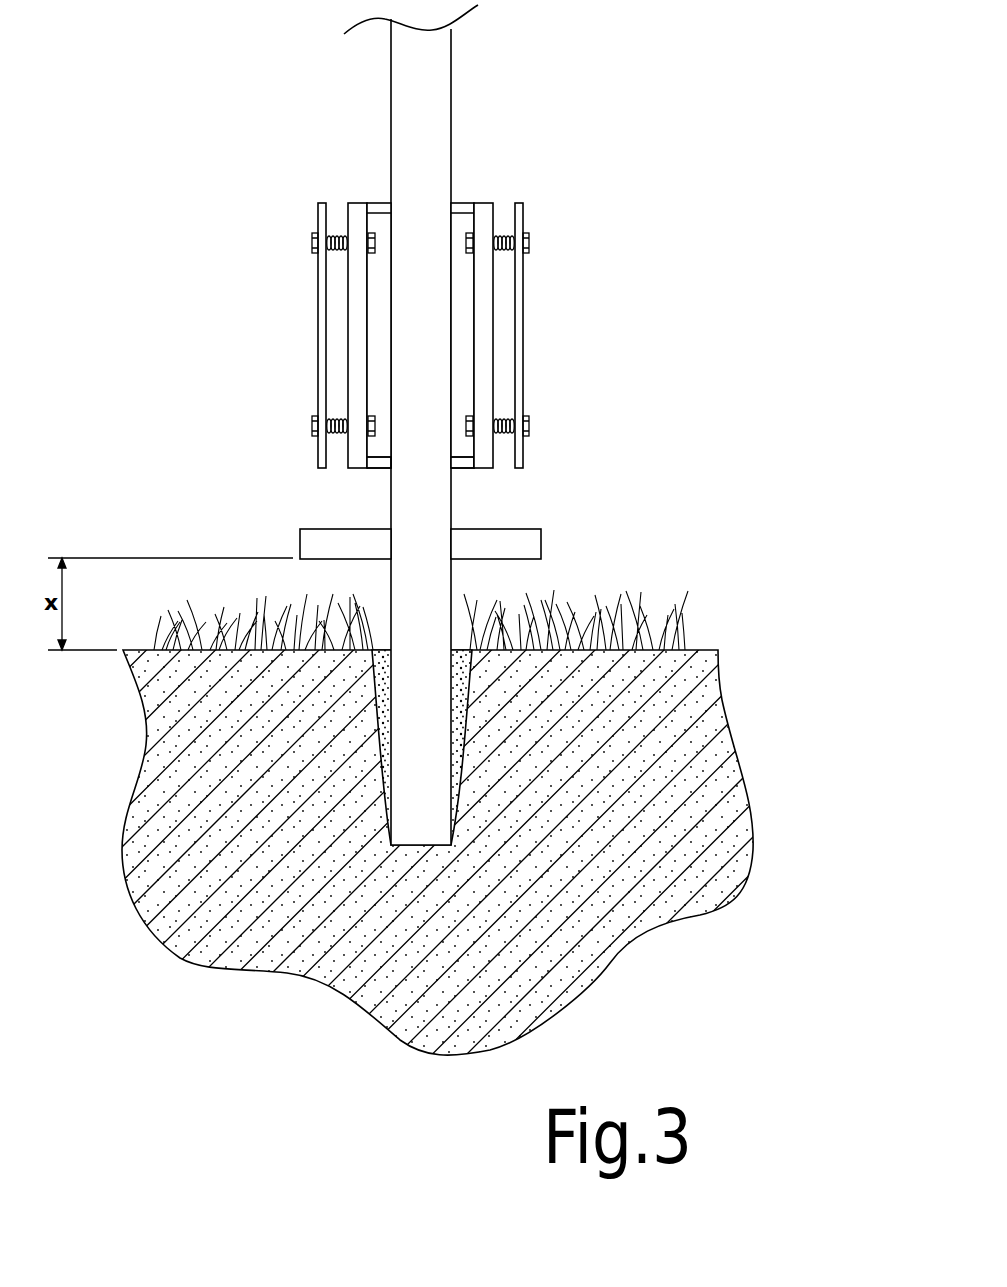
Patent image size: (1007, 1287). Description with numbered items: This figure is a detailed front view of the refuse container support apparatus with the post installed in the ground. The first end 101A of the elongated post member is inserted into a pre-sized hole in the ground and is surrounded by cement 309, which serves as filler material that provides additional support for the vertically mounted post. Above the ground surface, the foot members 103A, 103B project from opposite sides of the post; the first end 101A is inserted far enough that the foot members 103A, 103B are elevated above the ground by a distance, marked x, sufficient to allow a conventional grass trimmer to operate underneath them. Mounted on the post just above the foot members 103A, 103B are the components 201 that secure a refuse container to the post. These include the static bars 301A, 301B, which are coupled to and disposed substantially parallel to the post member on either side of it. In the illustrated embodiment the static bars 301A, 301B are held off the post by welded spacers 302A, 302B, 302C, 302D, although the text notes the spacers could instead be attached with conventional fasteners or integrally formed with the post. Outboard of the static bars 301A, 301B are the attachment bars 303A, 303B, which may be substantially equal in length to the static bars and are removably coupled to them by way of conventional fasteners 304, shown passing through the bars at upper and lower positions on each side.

The first end 101A is at (423, 822).
The foot member 103A is at (307, 540).
The foot member 103B is at (523, 547).
The components 201 is at (252, 320).
The static bar 301A is at (352, 207).
The static bar 301B is at (486, 207).
The spacer 302A is at (380, 207).
The spacer 302B is at (462, 207).
The spacer 302C is at (373, 463).
The spacer 302D is at (463, 463).
The attachment bar 303A is at (318, 203).
The attachment bar 303B is at (520, 207).
The fasteners 304 is at (311, 240).
The cement 309 is at (467, 707).